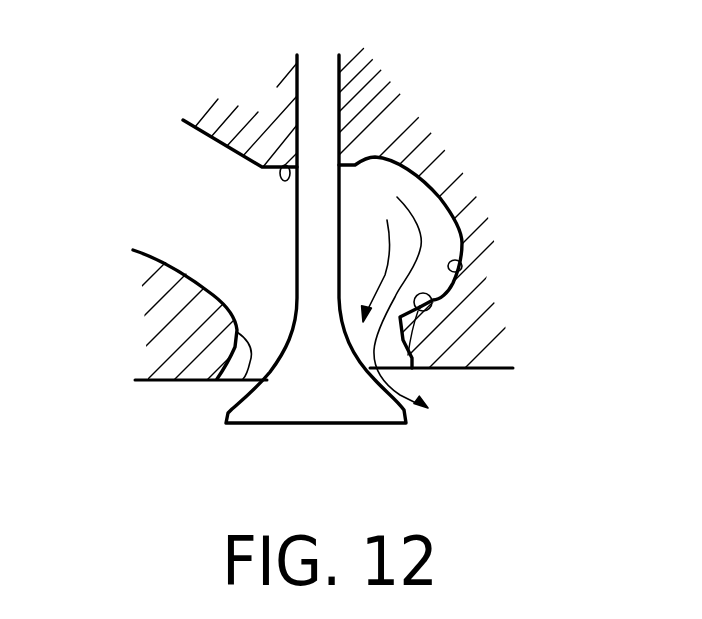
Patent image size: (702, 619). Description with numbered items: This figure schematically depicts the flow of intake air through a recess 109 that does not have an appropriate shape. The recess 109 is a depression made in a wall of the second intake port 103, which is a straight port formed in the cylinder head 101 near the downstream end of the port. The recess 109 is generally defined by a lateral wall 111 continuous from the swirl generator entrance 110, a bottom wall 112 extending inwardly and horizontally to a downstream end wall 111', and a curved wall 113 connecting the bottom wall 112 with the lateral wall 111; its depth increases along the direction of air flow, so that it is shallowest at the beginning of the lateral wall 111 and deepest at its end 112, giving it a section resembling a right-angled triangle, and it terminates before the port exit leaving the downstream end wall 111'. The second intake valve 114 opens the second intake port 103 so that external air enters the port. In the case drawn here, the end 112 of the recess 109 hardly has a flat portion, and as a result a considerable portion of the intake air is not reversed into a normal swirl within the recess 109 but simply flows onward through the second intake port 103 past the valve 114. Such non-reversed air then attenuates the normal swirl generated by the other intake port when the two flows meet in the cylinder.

The cylinder head 101 is at (503, 347).
The second intake port 103 is at (183, 237).
The recess 109 is at (443, 237).
The swirl generator entrance 110 is at (247, 183).
The lateral wall 111 is at (254, 106).
The downstream end wall 111' is at (200, 396).
The bottom wall 112 is at (450, 367).
The curved wall 113 is at (448, 263).
The second intake valve 114 is at (325, 402).